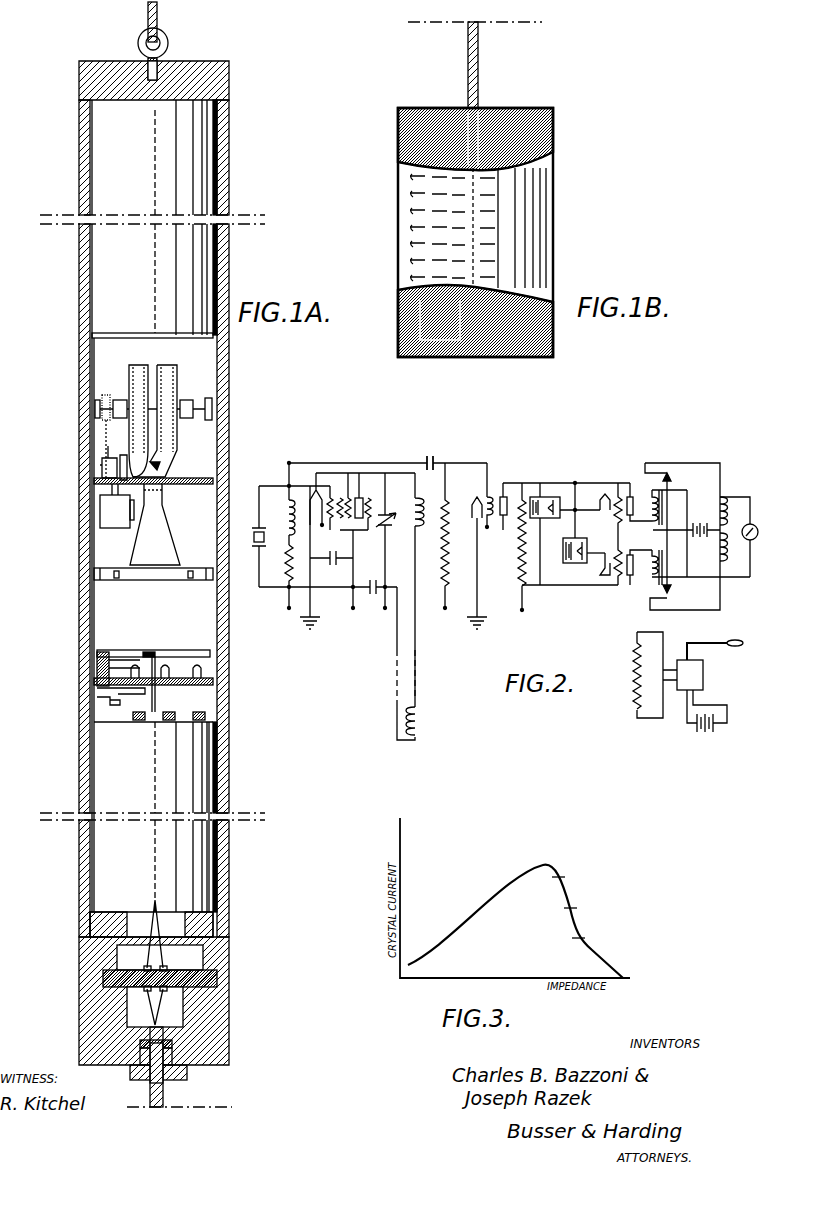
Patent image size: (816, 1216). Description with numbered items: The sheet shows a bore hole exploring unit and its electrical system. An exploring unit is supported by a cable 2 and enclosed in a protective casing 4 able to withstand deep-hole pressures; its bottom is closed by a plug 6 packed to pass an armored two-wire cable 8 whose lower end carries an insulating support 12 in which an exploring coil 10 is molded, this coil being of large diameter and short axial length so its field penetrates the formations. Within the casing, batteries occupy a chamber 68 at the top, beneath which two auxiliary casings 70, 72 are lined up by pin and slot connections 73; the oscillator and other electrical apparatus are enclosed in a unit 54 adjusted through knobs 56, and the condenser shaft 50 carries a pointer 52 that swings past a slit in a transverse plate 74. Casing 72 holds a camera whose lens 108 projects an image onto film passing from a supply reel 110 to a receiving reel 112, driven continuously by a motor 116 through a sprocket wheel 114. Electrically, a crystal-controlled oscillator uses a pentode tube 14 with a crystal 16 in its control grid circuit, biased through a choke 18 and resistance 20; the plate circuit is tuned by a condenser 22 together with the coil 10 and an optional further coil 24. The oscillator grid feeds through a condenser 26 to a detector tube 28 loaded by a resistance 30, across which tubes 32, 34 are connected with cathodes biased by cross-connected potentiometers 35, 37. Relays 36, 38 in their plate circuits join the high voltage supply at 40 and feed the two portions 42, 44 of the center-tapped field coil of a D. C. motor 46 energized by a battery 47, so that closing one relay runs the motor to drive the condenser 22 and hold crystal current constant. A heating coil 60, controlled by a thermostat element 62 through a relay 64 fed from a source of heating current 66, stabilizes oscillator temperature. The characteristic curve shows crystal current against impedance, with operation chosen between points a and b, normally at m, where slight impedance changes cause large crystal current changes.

In FIG. 1A, the cable 2 is at (160, 16).
In FIG. 1A, the protective casing 4 is at (229, 148).
In FIG. 1A, the plug 6 is at (229, 1000).
In FIG. 1A, the armored two-wire cable 8 is at (164, 1094).
In FIG. 1B, the armored two-wire cable 8 is at (479, 66).
In FIG. 1B, the coil 10 is at (553, 130).
In FIG. 2, the coil 10 is at (418, 720).
In FIG. 1B, the insulating support 12 is at (553, 185).
In FIG. 2, the pentode tube 14 is at (367, 469).
In FIG. 2, the crystal 16 is at (255, 540).
In FIG. 2, the choke 18 is at (288, 517).
In FIG. 2, the resistance 20 is at (287, 565).
In FIG. 2, the condenser 22 is at (378, 530).
In FIG. 2, the further coil 24 is at (430, 504).
In FIG. 2, the condenser 26 is at (434, 462).
In FIG. 2, the detector tube 28 is at (509, 468).
In FIG. 2, the resistance 30 is at (520, 553).
In FIG. 2, the tube 32 is at (636, 471).
In FIG. 2, the tube 34 is at (624, 597).
In FIG. 2, the potentiometer 35 is at (568, 493).
In FIG. 2, the relay 36 is at (650, 500).
In FIG. 2, the potentiometer 37 is at (587, 541).
In FIG. 2, the relay 38 is at (650, 560).
In FIG. 2, the high voltage supply connection 40 is at (675, 530).
In FIG. 2, the field coil portion 42 is at (724, 500).
In FIG. 2, the field coil portion 44 is at (727, 553).
In FIG. 2, the D. C. motor 46 is at (754, 526).
In FIG. 2, the battery 47 is at (698, 523).
In FIG. 1A, the shaft 50 is at (156, 697).
In FIG. 1A, the pointer 52 is at (145, 652).
In FIG. 1A, the unit 54 is at (205, 765).
In FIG. 1A, the knobs 56 is at (135, 720).
In FIG. 2, the heating coil 60 is at (636, 660).
In FIG. 2, the thermostat element 62 is at (730, 640).
In FIG. 2, the relay 64 is at (703, 675).
In FIG. 2, the source of heating current 66 is at (714, 732).
In FIG. 1A, the chamber 68 is at (90, 268).
In FIG. 1A, the auxiliary casing 70 is at (90, 612).
In FIG. 1A, the auxiliary casing 72 is at (92, 480).
In FIG. 1A, the pin and slot connections 73 is at (118, 580).
In FIG. 1A, the transverse plate 74 is at (178, 650).
In FIG. 1A, the lens 108 is at (158, 508).
In FIG. 1A, the supply reel 110 is at (168, 365).
In FIG. 1A, the receiving reel 112 is at (136, 365).
In FIG. 1A, the sprocket wheel 114 is at (157, 463).
In FIG. 1A, the motor 116 is at (100, 517).
In FIG. 3, the operating point a is at (564, 876).
In FIG. 3, the normal operating point m is at (578, 908).
In FIG. 3, the operating point b is at (584, 937).